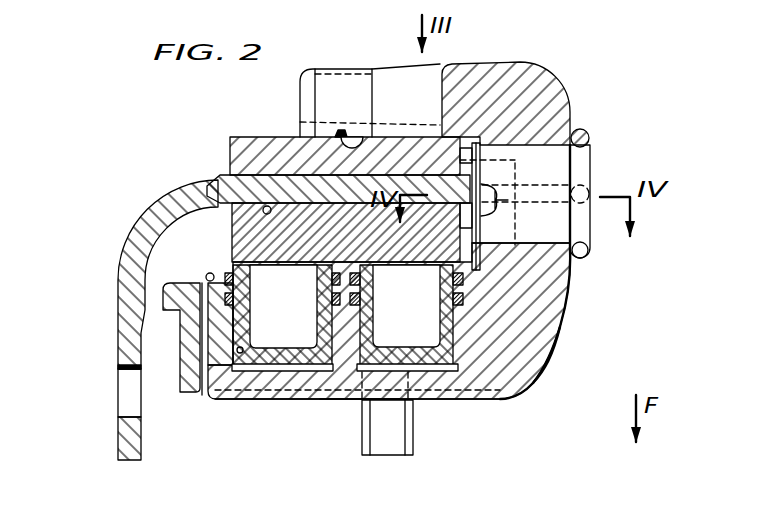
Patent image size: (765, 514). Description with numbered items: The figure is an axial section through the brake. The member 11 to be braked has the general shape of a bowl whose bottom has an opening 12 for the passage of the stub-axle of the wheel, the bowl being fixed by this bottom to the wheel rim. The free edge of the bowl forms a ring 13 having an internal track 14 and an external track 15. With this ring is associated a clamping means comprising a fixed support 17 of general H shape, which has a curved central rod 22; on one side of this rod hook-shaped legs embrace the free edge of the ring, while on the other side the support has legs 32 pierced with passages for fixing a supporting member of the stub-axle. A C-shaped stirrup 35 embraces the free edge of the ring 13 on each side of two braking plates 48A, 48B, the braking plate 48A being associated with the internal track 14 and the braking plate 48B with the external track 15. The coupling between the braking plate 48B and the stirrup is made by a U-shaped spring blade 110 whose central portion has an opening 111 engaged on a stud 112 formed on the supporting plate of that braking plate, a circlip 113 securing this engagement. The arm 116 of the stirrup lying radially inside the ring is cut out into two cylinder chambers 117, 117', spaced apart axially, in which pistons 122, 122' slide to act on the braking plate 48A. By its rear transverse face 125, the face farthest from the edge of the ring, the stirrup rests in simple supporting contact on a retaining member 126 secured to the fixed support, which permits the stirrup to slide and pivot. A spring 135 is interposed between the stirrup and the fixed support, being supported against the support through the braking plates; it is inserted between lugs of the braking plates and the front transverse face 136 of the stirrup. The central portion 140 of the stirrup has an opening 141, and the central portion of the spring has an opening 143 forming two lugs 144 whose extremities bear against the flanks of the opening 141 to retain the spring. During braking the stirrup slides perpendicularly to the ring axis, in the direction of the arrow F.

The member to be braked 11 is at (121, 242).
The opening 12 is at (130, 462).
The ring 13 is at (440, 195).
The internal track 14 is at (267, 206).
The external track 15 is at (342, 177).
The fixed support 17 is at (197, 404).
The central rod 22 is at (188, 342).
The legs 32 is at (397, 433).
The stirrup 35 is at (536, 386).
The braking plate 48A is at (246, 234).
The braking plate 48B is at (226, 135).
The spring blade 110 is at (364, 63).
The opening 111 is at (352, 155).
The stud 112 is at (343, 140).
The circlip 113 is at (328, 120).
The arm 116 is at (340, 390).
The cylinder chamber 117 is at (192, 332).
The cylinder chamber 117' is at (470, 354).
The piston 122 is at (410, 321).
The piston 122' is at (210, 295).
The rear transverse face 125 is at (564, 297).
The retaining member 126 is at (585, 120).
The spring 135 is at (488, 138).
The front transverse face 136 is at (478, 263).
The central portion 140 is at (527, 357).
The opening 141 is at (552, 148).
The opening 143 is at (513, 185).
The lugs 144 is at (505, 222).